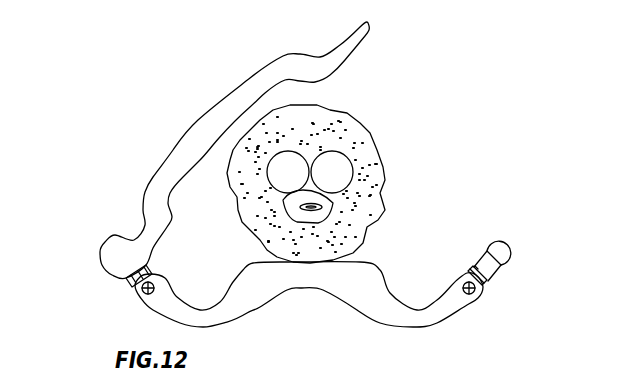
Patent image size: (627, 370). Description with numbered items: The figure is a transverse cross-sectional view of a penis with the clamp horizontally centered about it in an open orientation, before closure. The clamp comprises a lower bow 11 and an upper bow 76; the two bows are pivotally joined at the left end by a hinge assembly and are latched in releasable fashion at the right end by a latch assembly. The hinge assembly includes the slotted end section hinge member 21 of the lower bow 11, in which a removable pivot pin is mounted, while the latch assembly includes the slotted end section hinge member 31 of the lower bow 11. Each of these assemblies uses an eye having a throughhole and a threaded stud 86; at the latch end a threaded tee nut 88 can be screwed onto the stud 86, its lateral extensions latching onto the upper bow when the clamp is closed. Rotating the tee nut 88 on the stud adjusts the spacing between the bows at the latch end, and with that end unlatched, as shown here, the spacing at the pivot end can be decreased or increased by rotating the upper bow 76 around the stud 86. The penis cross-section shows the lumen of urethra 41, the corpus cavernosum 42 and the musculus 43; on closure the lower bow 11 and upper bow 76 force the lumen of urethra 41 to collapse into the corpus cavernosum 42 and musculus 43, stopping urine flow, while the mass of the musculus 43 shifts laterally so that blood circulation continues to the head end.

The lower bow 11 is at (327, 292).
The slotted end section hinge member 21 is at (137, 297).
The slotted end section hinge member 31 is at (477, 300).
The lumen of urethra 41 is at (323, 207).
The corpus cavernosum 42 is at (337, 172).
The musculus 43 is at (334, 133).
The upper bow 76 is at (202, 113).
The threaded stud 86 is at (128, 282).
The threaded tee nut 88 is at (512, 262).